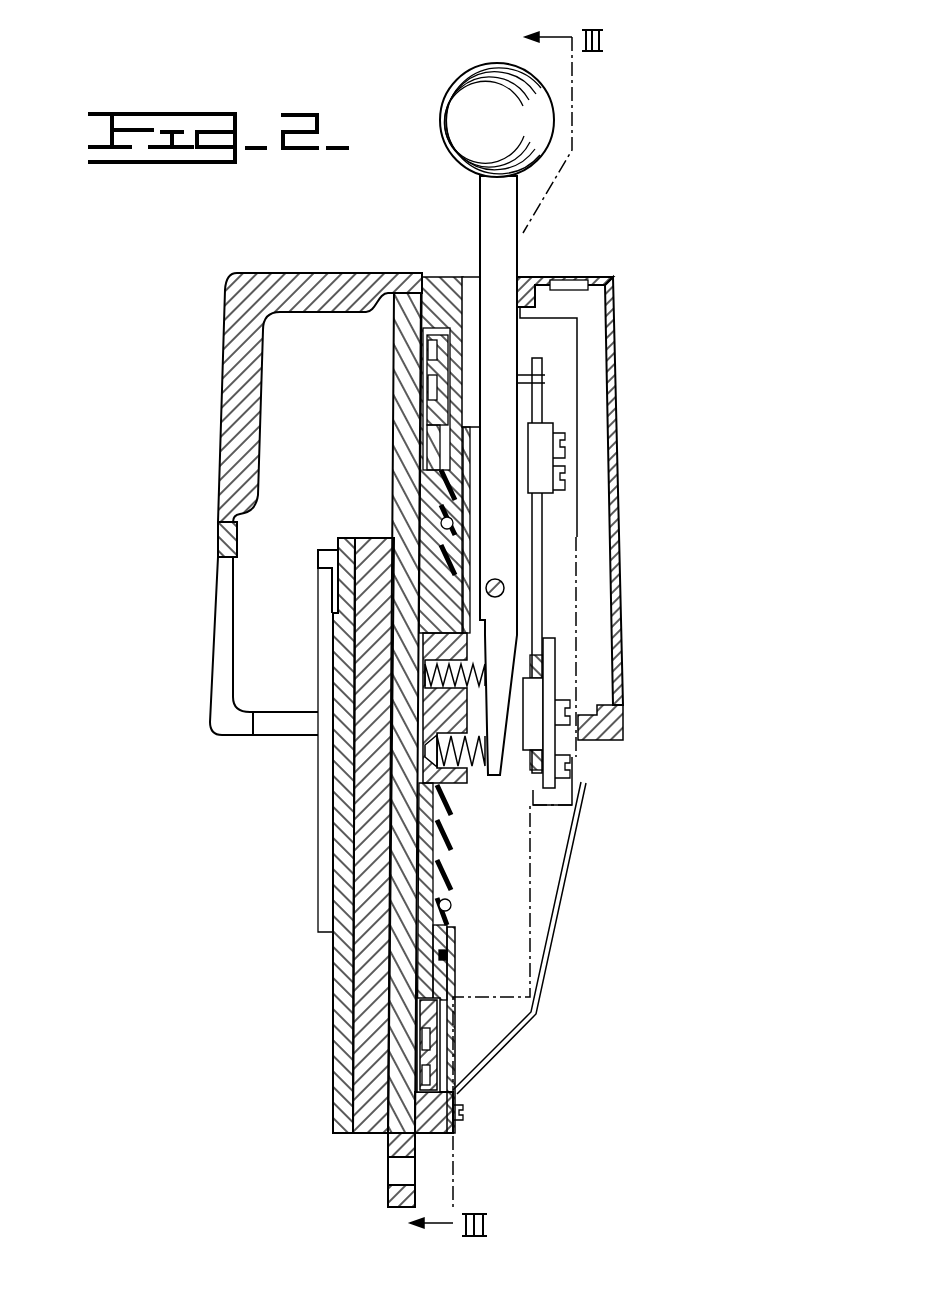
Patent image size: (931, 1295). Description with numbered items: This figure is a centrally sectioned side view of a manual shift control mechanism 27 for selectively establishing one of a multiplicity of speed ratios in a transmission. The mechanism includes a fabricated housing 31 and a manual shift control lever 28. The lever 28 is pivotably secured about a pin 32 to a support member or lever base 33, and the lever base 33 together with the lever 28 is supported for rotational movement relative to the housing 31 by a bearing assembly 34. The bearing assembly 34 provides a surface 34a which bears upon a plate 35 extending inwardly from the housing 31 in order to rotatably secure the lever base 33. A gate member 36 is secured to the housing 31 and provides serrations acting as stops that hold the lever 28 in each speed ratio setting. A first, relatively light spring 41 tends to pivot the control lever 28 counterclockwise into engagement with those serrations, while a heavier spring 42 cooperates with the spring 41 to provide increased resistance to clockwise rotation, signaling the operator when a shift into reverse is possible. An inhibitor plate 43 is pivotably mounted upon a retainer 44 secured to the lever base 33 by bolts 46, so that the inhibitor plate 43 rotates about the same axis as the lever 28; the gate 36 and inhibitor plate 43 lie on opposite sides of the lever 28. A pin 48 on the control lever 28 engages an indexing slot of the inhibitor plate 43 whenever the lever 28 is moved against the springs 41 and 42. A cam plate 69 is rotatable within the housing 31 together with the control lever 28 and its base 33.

The manual shift control mechanism 27 is at (640, 280).
The manual shift control lever 28 is at (517, 185).
The fabricated housing 31 is at (325, 266).
The pin 32 is at (504, 583).
The lever base 33 is at (518, 787).
The bearing assembly 34 is at (462, 890).
The bearing surface 34a is at (448, 957).
The plate 35 is at (455, 945).
The gate member 36 is at (462, 283).
The first spring 41 is at (427, 672).
The heavier spring 42 is at (472, 772).
The inhibitor plate 43 is at (542, 510).
The retainer 44 is at (540, 668).
The bolts 46 is at (598, 742).
The pin 48 is at (545, 380).
The cam plate 69 is at (440, 1045).